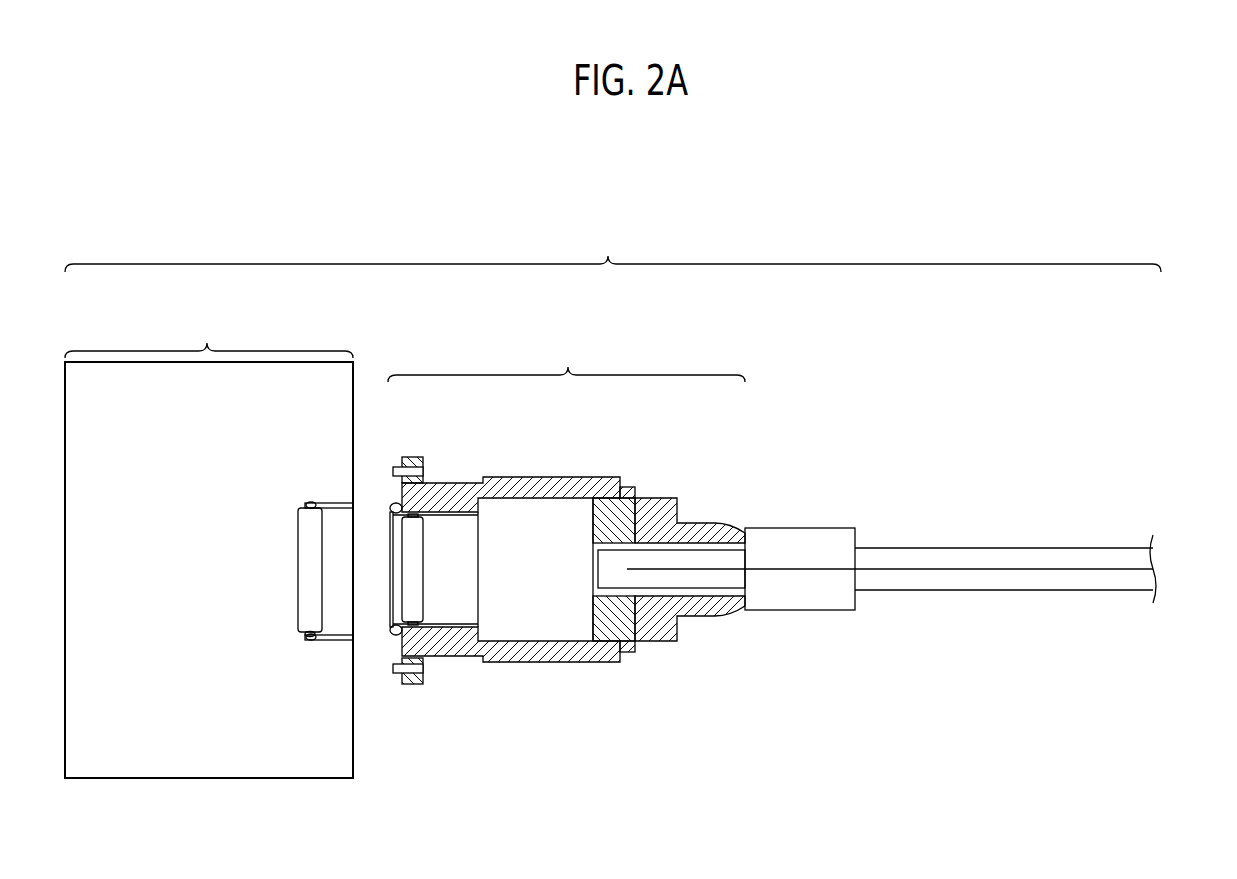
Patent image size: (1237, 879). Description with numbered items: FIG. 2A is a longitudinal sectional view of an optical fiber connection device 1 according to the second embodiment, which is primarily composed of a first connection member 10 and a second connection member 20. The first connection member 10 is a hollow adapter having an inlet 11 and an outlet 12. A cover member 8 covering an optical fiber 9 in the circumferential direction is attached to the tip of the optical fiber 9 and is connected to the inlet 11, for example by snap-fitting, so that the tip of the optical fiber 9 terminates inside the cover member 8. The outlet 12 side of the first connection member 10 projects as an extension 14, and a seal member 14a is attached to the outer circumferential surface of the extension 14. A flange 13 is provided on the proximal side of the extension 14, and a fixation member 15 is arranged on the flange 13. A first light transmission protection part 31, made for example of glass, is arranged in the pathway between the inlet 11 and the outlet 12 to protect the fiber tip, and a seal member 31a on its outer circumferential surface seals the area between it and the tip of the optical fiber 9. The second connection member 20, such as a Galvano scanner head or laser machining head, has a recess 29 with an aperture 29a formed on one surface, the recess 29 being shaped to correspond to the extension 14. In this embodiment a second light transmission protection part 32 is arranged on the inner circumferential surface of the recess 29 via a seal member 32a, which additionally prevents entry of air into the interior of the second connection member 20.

The optical fiber connection device 1 is at (613, 247).
The second connection member 20 is at (209, 544).
The first connection member 10 is at (566, 357).
The recess 29 is at (318, 501).
The aperture 29a is at (358, 548).
The second light transmission protection part 32 is at (298, 583).
The seal member 32a is at (307, 637).
The outlet 12 is at (389, 513).
The flange 13 is at (408, 459).
The extension 14 is at (390, 617).
The seal member 14a is at (397, 635).
The fixation member 15 is at (423, 471).
The first light transmission protection part 31 is at (415, 558).
The seal member 31a is at (440, 627).
The cover member 8 is at (685, 532).
The inlet 11 is at (760, 528).
The optical fiber 9 is at (1002, 546).